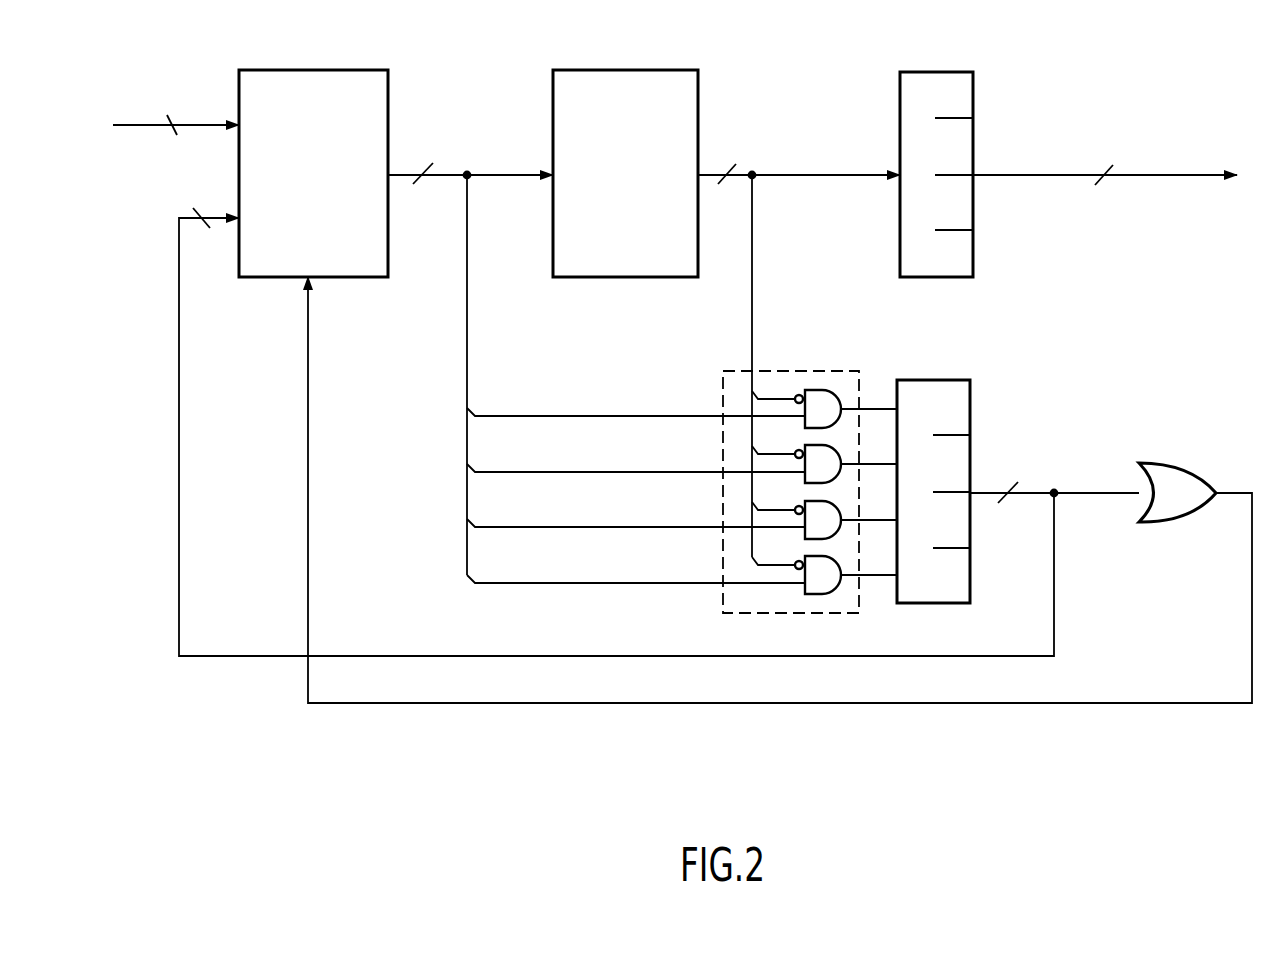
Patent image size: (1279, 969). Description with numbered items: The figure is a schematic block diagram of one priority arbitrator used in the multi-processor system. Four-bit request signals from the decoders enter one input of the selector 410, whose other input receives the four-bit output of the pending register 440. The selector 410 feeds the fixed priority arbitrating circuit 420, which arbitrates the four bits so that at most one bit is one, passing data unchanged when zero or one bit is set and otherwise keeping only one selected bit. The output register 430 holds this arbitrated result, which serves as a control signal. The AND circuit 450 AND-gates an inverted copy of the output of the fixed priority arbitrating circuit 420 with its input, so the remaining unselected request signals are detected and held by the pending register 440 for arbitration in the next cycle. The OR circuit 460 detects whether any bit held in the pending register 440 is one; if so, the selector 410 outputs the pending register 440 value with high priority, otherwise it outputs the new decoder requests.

The selector 410 is at (320, 70).
The fixed priority arbitrating circuit 420 is at (615, 70).
The output register 430 is at (932, 72).
The pending register 440 is at (960, 380).
The AND circuit 450 is at (800, 371).
The OR circuit 460 is at (1188, 472).